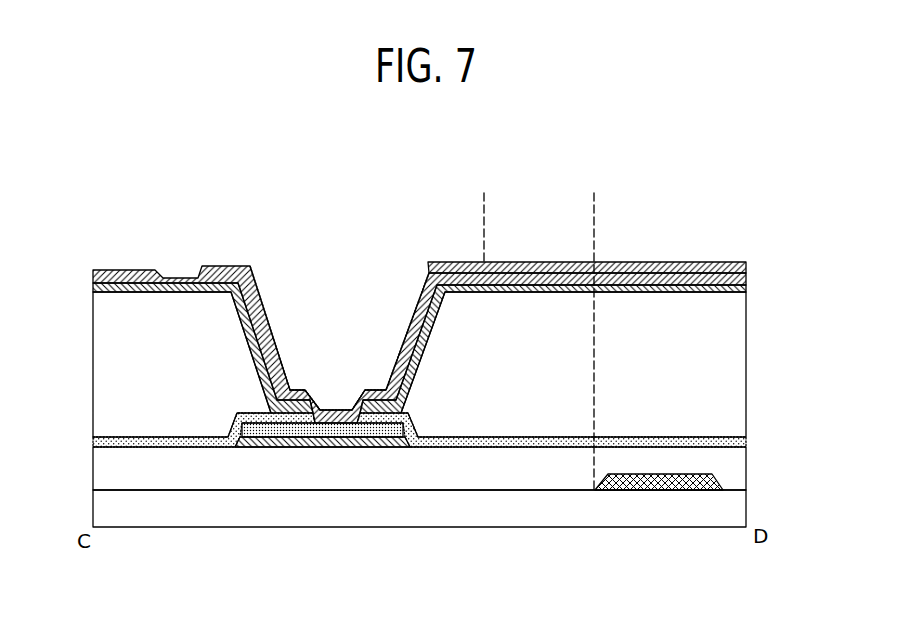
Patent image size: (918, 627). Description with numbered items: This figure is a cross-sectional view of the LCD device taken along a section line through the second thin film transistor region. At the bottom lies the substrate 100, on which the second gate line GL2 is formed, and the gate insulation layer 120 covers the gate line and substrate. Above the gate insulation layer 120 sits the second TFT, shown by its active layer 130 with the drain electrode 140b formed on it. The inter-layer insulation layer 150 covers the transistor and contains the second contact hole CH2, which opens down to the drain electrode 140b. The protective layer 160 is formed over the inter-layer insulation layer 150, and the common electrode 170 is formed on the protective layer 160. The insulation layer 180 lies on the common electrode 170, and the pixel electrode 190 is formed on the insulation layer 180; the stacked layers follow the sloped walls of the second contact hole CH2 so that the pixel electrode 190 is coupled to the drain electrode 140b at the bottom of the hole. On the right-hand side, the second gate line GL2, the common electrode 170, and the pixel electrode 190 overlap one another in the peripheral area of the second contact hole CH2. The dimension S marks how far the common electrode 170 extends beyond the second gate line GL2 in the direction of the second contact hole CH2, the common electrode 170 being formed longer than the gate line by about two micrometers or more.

The substrate 100 is at (746, 513).
The gate insulation layer 120 is at (740, 451).
The active layer 130 is at (272, 440).
The drain electrode 140b is at (355, 440).
The inter-layer insulation layer 150 is at (746, 440).
The protective layer 160 is at (735, 363).
The common electrode 170 is at (93, 291).
The insulation layer 180 is at (746, 279).
The pixel electrode 190 is at (746, 268).
The second gate line GL2 is at (715, 478).
The second contact hole CH2 is at (334, 385).
The spacing S is at (594, 218).